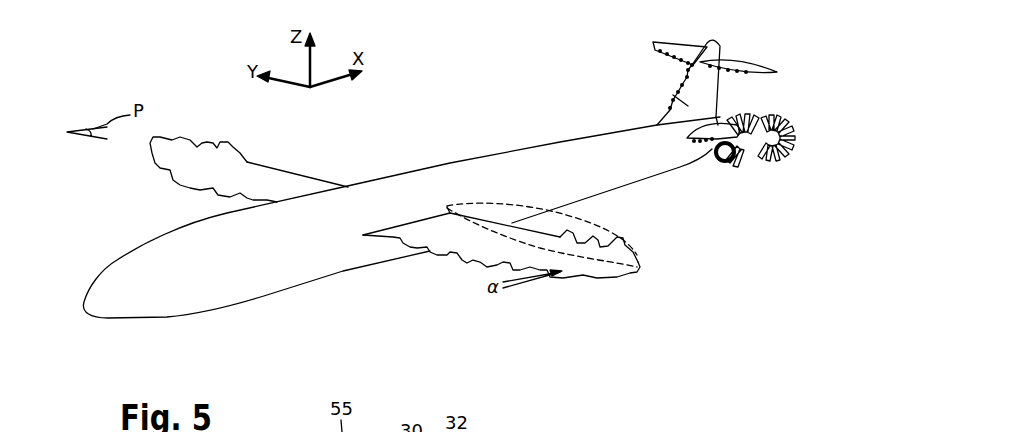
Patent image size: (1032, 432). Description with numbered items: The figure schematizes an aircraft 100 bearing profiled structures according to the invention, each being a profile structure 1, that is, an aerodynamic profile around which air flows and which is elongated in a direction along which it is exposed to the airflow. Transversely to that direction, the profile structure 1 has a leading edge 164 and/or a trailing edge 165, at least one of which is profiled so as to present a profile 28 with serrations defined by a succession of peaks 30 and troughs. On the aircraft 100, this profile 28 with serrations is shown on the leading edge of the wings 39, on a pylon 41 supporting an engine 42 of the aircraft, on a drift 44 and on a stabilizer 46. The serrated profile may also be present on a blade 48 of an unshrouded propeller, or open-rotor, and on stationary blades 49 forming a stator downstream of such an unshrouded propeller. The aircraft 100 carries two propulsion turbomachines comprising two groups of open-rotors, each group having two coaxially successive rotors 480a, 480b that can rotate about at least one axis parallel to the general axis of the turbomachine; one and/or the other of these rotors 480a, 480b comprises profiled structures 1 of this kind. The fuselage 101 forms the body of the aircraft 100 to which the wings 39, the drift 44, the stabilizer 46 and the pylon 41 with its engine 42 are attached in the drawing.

The profile structure 1 is at (627, 263).
The profile with serrations 28 is at (247, 160).
The peaks 30 is at (547, 280).
The wings 39 is at (241, 170).
The pylon 41 is at (713, 117).
The engine 42 is at (797, 198).
The drift 44 is at (670, 92).
The stabilizer 46 is at (670, 58).
The blade of an unshrouded propeller 48 is at (769, 175).
The stationary blades 49 is at (787, 150).
The aircraft 100 is at (276, 297).
The fuselage 101 is at (512, 180).
The leading edge 164 is at (217, 198).
The trailing edge 165 is at (197, 130).
The first rotor 480a is at (776, 198).
The second rotor 480b is at (818, 170).